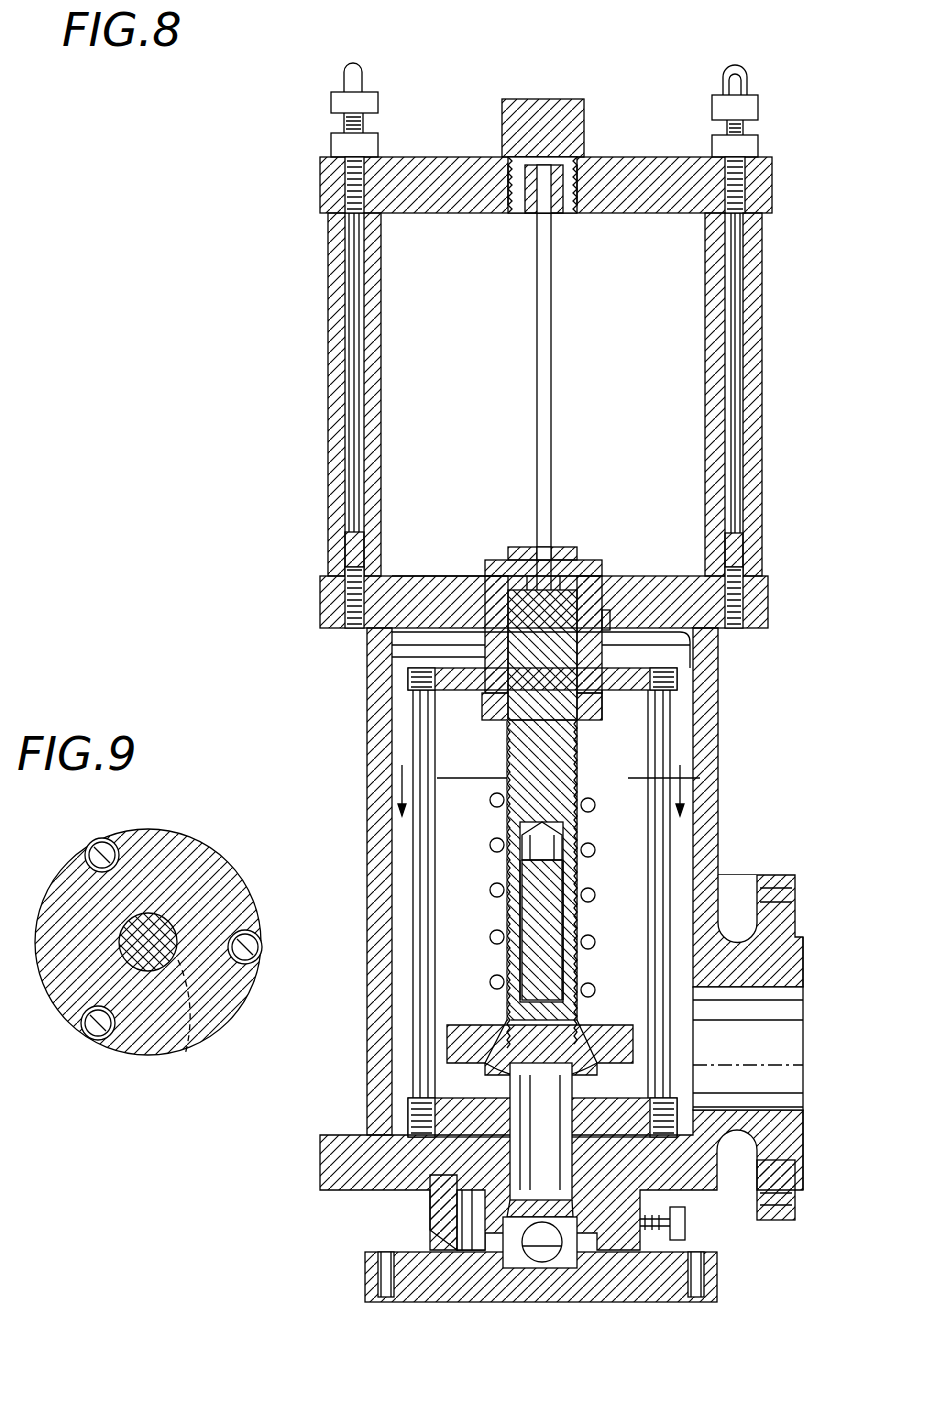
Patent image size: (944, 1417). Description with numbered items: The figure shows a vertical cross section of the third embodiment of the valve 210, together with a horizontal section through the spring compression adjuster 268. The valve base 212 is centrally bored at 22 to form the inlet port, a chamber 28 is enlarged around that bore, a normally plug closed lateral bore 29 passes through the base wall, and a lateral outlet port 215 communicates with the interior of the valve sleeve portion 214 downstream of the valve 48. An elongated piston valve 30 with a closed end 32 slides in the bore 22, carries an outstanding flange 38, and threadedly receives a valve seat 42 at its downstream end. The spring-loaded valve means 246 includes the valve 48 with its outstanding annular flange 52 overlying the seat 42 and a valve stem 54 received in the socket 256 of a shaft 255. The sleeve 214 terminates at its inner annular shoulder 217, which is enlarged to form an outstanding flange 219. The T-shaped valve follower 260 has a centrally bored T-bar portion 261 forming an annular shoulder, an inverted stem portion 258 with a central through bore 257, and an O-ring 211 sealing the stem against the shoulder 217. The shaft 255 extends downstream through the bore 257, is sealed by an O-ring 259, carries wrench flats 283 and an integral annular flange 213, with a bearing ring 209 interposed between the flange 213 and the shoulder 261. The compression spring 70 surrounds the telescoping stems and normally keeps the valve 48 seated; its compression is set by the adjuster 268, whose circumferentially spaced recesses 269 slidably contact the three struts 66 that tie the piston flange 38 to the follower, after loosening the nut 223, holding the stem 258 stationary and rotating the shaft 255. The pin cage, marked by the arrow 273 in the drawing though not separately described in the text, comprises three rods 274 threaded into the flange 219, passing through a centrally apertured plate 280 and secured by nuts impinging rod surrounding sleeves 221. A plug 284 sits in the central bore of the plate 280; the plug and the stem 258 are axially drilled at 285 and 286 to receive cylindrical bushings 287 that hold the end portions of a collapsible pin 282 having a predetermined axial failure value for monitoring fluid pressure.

In FIG. 8, the plug 284 is at (502, 140).
In FIG. 8, the centrally apertured plate 280 is at (320, 187).
In FIG. 8, the axial drilled hole 285 is at (551, 205).
In FIG. 8, the cylindrical bushings 287 is at (512, 213).
In FIG. 8, the tie bolt 273 is at (310, 333).
In FIG. 8, the rods 274 is at (350, 400).
In FIG. 8, the rod surrounding sleeves 221 is at (336, 452).
In FIG. 8, the collapsible pin 282 is at (546, 364).
In FIG. 8, the outstanding flange 219 is at (320, 610).
In FIG. 8, the inner annular shoulder 217 is at (440, 576).
In FIG. 8, the valve sleeve portion 214 is at (722, 794).
In FIG. 8, the valve 210 is at (784, 512).
In FIG. 8, the wrench flats 283 is at (580, 548).
In FIG. 8, the axial drilled hole 286 is at (555, 548).
In FIG. 8, the nut 223 is at (600, 562).
In FIG. 8, the O-ring 211 is at (612, 612).
In FIG. 8, the annular flange 213 is at (490, 705).
In FIG. 8, the spring-loaded valve means 246 is at (492, 954).
In FIG. 8, the valve stem 54 is at (562, 930).
In FIG. 9, the valve stem 54 is at (190, 1052).
In FIG. 8, the compression spring 70 is at (580, 880).
In FIG. 8, the socket 256 is at (522, 905).
In FIG. 8, the shaft 255 is at (497, 960).
In FIG. 8, the T-shaped valve follower 260 is at (404, 690).
In FIG. 8, the T-bar portion 261 is at (677, 676).
In FIG. 8, the central through bore 257 is at (500, 645).
In FIG. 8, the stem portion 258 is at (500, 668).
In FIG. 8, the O-ring 259 is at (602, 668).
In FIG. 8, the bearing ring 209 is at (640, 692).
In FIG. 8, the struts 66 is at (413, 870).
In FIG. 9, the struts 66 is at (92, 848).
In FIG. 8, the spring compression adjuster 268 is at (442, 776).
In FIG. 9, the spring compression adjuster 268 is at (170, 832).
In FIG. 8, the outstanding flange 38 is at (408, 1115).
In FIG. 8, the outstanding annular flange 52 is at (450, 1035).
In FIG. 8, the valve base 212 is at (810, 1140).
In FIG. 8, the valve seat 42 is at (705, 1090).
In FIG. 8, the lateral outlet port 215 is at (800, 992).
In FIG. 8, the valve 48 is at (540, 1140).
In FIG. 8, the valve base bore 22 is at (505, 1302).
In FIG. 8, the closed end 32 is at (555, 1290).
In FIG. 8, the chamber 28 is at (450, 1238).
In FIG. 8, the elongated piston valve 30 is at (460, 1205).
In FIG. 8, the lateral bore 29 is at (660, 1260).
In FIG. 9, the circumferentially spaced recesses 269 is at (102, 840).